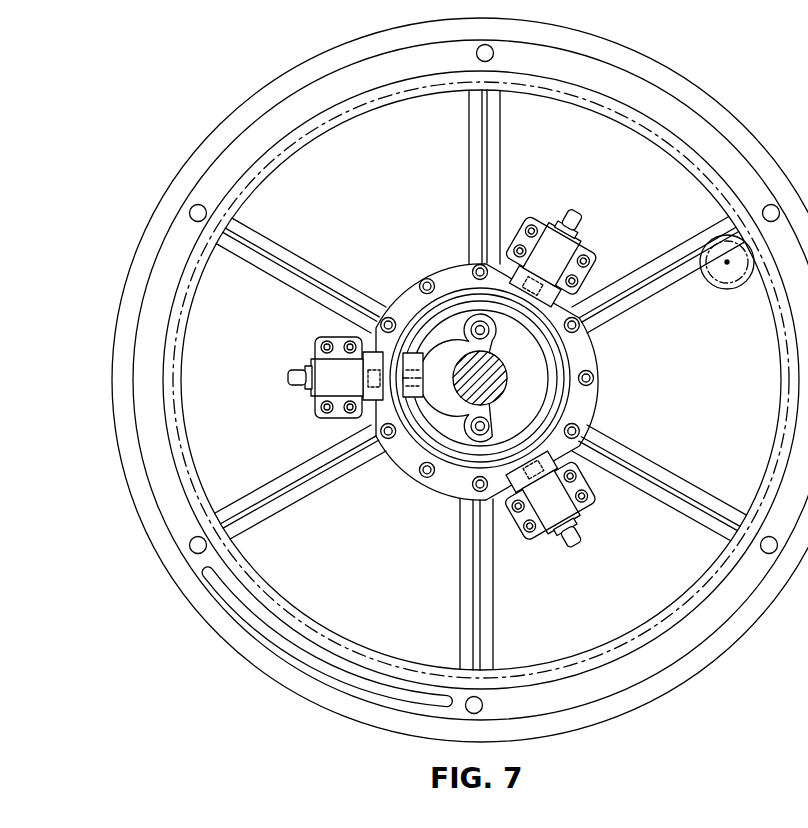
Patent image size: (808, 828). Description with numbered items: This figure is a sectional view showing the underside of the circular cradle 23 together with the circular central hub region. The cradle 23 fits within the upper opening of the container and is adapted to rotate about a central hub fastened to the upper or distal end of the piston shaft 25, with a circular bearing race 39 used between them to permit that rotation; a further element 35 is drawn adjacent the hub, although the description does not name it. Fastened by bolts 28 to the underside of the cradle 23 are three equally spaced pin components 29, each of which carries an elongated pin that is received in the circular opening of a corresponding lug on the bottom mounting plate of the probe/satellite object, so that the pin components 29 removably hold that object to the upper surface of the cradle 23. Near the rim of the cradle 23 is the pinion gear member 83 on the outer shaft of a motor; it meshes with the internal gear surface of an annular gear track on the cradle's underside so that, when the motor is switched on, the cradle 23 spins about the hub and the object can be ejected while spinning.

The circular cradle 23 is at (125, 410).
The piston shaft 25 is at (483, 379).
The bolts 28 is at (328, 346).
The pin component 29 is at (332, 378).
The spacer block 35 is at (412, 352).
The circular bearing race 39 is at (563, 351).
The pinion gear member 83 is at (732, 290).